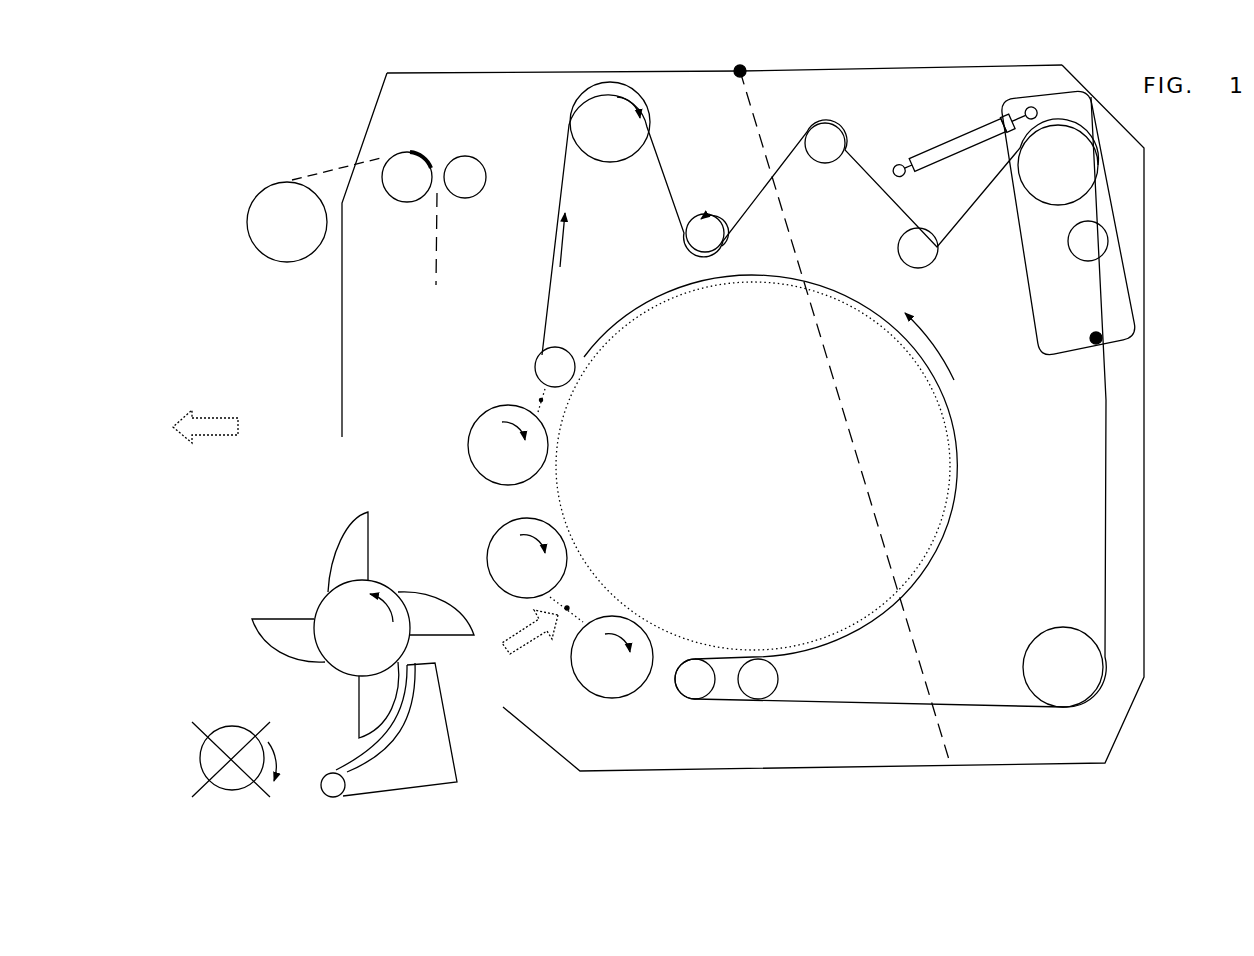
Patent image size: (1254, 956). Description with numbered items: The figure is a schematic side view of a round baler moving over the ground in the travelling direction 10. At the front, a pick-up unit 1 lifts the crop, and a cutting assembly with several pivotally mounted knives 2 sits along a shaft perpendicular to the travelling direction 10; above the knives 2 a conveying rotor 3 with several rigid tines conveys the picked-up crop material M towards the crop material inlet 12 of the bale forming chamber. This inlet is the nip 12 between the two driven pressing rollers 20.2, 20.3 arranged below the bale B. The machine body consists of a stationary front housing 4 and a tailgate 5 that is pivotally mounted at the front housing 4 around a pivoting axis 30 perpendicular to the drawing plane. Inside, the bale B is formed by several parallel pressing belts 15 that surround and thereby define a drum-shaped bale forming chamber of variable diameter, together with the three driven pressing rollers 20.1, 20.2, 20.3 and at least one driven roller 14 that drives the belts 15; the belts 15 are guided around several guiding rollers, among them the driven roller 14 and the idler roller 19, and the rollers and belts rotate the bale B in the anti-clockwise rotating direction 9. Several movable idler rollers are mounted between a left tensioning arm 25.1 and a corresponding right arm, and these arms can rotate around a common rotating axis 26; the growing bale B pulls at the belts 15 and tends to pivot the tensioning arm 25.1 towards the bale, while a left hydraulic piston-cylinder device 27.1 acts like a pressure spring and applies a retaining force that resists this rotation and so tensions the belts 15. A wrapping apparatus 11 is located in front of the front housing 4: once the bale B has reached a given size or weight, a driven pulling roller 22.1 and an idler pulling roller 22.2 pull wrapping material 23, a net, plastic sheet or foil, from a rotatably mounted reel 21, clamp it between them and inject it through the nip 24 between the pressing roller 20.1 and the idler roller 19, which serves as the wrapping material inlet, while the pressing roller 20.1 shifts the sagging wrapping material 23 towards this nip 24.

The pick-up unit 1 is at (232, 740).
The knives 2 is at (435, 752).
The conveying rotor 3 is at (338, 607).
The front housing 4 is at (453, 73).
The tailgate 5 is at (827, 70).
The rotating direction 9 is at (936, 345).
The travelling direction 10 is at (203, 428).
The wrapping apparatus 11 is at (266, 164).
The crop material inlet 12 is at (567, 608).
The driven roller 14 is at (583, 118).
The pressing belts 15 is at (1105, 588).
The idler roller 19 is at (553, 367).
The pressing roller 20.1 is at (492, 445).
The pressing roller 20.2 is at (515, 578).
The pressing roller 20.3 is at (605, 675).
The reel 21 is at (291, 243).
The driven pulling roller 22.1 is at (405, 176).
The idler pulling roller 22.2 is at (466, 175).
The wrapping material 23 is at (332, 170).
The nip 24 is at (541, 400).
The left tensioning arm 25.1 is at (1042, 283).
The rotating axis 26 is at (1096, 338).
The left hydraulic piston-cylinder device 27.1 is at (973, 138).
The pivoting axis 30 is at (740, 72).
The bale B is at (568, 415).
The crop material M is at (527, 648).